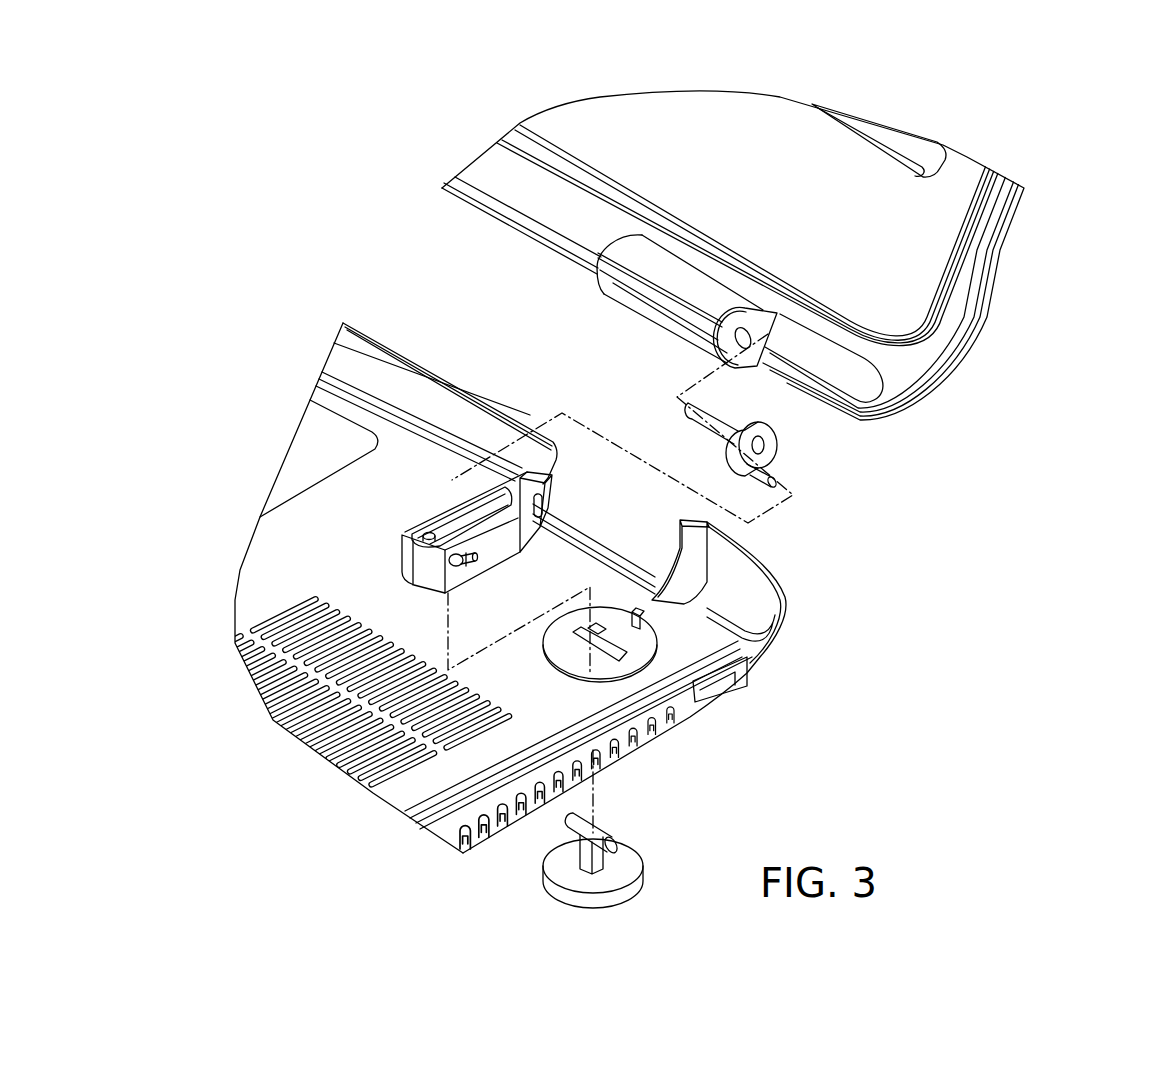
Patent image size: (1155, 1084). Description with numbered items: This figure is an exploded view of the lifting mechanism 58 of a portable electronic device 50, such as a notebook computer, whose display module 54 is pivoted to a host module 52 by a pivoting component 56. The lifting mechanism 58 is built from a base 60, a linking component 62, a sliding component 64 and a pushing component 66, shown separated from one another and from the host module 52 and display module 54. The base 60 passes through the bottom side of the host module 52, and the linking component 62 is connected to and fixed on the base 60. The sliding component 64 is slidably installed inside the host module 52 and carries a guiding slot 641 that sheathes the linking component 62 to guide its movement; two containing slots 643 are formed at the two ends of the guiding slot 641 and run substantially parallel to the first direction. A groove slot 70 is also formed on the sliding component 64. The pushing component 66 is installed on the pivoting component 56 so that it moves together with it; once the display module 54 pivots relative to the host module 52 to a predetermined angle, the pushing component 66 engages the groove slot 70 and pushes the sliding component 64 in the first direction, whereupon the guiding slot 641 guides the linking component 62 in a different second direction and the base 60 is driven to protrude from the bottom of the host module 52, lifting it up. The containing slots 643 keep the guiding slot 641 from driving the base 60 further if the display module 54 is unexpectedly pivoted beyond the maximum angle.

The portable electronic device 50 is at (1068, 135).
The host module 52 is at (408, 808).
The display module 54 is at (950, 232).
The pivoting component 56 is at (762, 422).
The lifting mechanism 58 is at (866, 469).
The base 60 is at (633, 866).
The linking component 62 is at (618, 834).
The sliding component 64 is at (502, 548).
The guiding slot 641 is at (462, 564).
The containing slot 643 is at (480, 558).
The pushing component 66 is at (778, 474).
The groove slot 70 is at (545, 512).